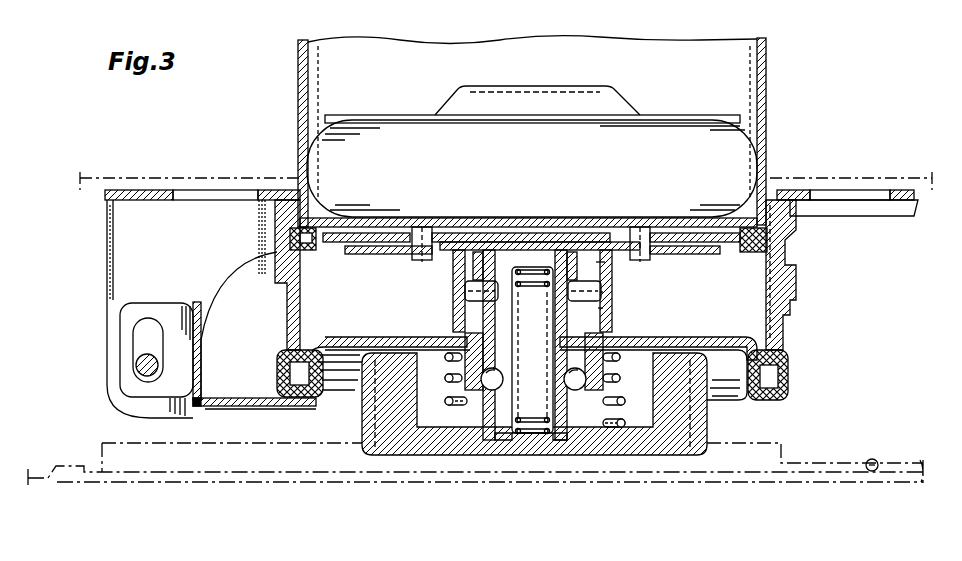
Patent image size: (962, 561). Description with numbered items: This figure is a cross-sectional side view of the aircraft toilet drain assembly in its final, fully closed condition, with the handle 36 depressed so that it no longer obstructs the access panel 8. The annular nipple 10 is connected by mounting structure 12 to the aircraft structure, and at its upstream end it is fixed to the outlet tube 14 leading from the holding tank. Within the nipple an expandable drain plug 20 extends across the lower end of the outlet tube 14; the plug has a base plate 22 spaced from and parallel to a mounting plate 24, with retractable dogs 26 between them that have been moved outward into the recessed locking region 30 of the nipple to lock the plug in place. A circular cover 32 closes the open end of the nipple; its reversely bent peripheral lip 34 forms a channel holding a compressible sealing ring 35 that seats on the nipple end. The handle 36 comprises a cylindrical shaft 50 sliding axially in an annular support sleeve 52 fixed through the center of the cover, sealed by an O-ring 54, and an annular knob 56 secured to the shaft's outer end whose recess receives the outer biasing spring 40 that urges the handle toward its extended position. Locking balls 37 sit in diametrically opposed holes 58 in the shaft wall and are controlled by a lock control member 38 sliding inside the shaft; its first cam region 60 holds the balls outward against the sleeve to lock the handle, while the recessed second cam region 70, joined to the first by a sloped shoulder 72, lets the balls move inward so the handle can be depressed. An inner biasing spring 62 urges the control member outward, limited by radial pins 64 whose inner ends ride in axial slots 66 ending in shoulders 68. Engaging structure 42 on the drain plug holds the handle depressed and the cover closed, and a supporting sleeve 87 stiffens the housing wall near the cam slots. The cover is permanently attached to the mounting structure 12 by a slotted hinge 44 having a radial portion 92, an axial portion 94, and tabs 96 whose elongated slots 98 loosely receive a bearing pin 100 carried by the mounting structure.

The access panel 8 is at (230, 480).
The annular nipple 10 is at (285, 301).
The mounting structure 12 is at (124, 203).
The outlet tube 14 is at (767, 90).
The expandable drain plug 20 is at (532, 151).
The base plate 22 is at (378, 254).
The mounting plate 24 is at (366, 218).
The retractable dogs 26 is at (320, 255).
The recessed locking region 30 is at (287, 222).
The circular cover 32 is at (343, 340).
The reversely bent peripheral lip 34 is at (336, 398).
The compressible circular sealing ring 35 is at (283, 375).
The handle 36 is at (458, 472).
The locking balls 37 is at (498, 370).
The lock control member 38 is at (600, 330).
The outer biasing spring 40 is at (617, 432).
The engaging structure 42 is at (597, 262).
The slotted hinge 44 is at (208, 412).
The cylindrical shaft 50 is at (599, 310).
The annular support sleeve 52 is at (456, 378).
The O-ring 54 is at (466, 343).
The annular knob 56 is at (381, 455).
The diametrically opposed holes 58 is at (468, 401).
The first cam region 60 is at (503, 441).
The inner biasing spring 62 is at (549, 262).
The radial pins 64 is at (467, 291).
The axial slot 66 is at (489, 262).
The shoulder 68 is at (612, 376).
The second cam region 70 is at (502, 379).
The sloped shoulder 72 is at (514, 437).
The supporting sleeve 87 is at (601, 292).
The radial portion 92 is at (258, 408).
The axial portion 94 is at (201, 349).
The tabs 96 is at (172, 312).
The axially elongated slots 98 is at (135, 330).
The bearing pin 100 is at (140, 366).